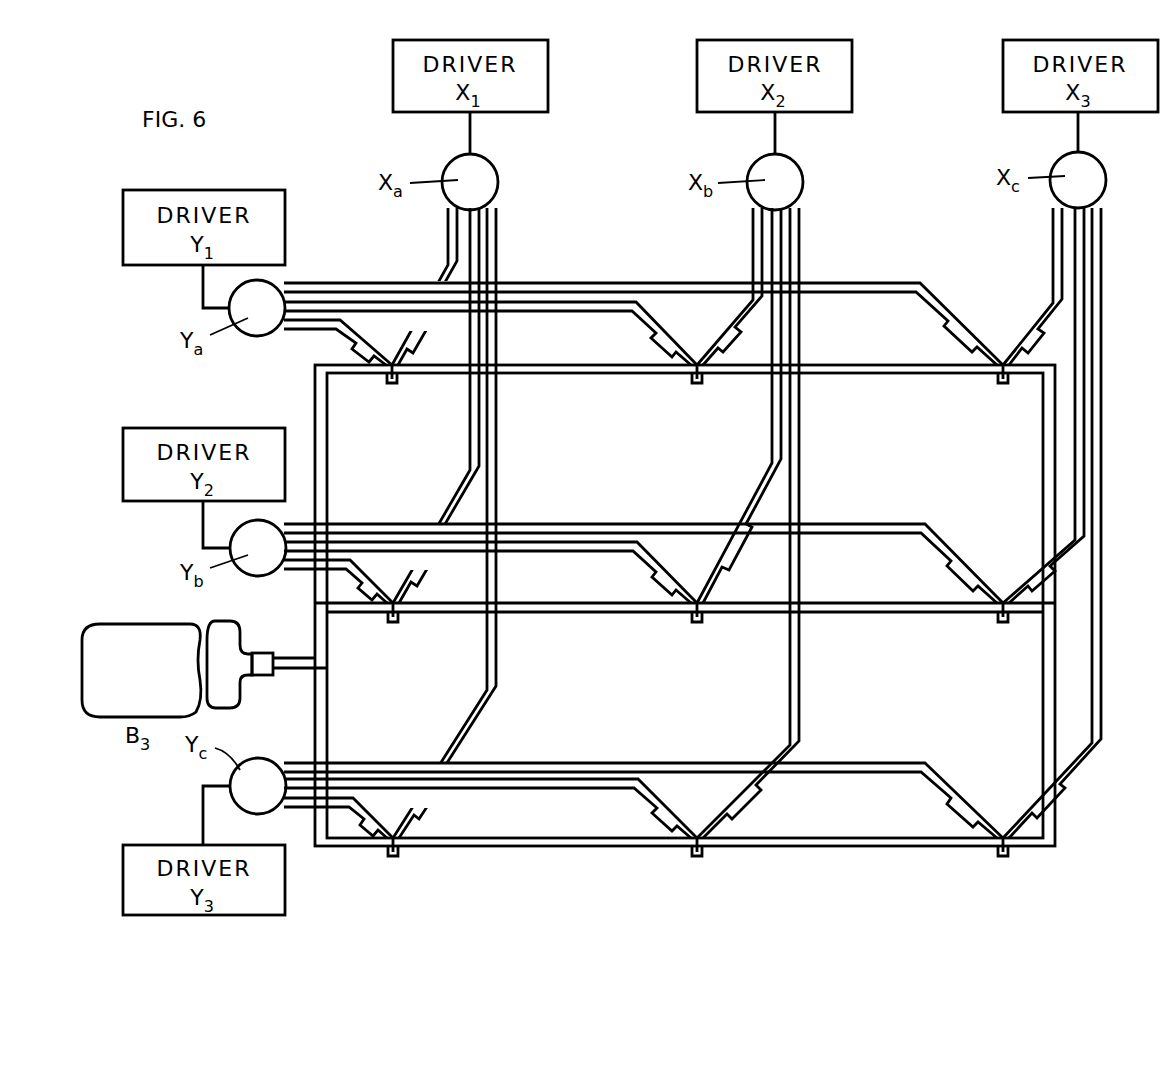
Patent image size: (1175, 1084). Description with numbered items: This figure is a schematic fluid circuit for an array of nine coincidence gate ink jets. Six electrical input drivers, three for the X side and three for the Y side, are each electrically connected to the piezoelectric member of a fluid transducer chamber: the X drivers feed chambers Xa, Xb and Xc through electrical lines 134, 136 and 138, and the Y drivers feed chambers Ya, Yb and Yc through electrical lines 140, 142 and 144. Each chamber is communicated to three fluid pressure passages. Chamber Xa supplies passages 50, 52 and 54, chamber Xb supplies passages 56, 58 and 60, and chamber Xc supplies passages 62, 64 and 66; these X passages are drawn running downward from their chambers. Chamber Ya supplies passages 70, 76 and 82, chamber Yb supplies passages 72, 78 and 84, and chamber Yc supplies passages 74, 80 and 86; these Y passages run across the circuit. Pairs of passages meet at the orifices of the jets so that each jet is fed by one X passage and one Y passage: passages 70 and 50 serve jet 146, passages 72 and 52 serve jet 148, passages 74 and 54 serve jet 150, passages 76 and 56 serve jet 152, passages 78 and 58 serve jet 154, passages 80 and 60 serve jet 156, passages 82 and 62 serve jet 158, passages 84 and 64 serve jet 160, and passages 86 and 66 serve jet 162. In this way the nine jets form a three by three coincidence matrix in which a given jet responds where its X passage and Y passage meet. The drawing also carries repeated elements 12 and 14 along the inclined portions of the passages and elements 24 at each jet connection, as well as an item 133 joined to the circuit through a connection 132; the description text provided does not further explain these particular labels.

The Y-line switching element 12 is at (357, 340).
The X-line switching element 14 is at (420, 322).
The cell connection stub 24 is at (396, 385).
The fluid pressure passage 50 is at (449, 229).
The fluid pressure passage 52 is at (468, 430).
The fluid pressure passage 54 is at (497, 665).
The fluid pressure passage 56 is at (753, 228).
The fluid pressure passage 58 is at (772, 430).
The fluid pressure passage 60 is at (800, 665).
The fluid pressure passage 62 is at (1053, 225).
The fluid pressure passage 64 is at (1078, 428).
The fluid pressure passage 66 is at (1098, 630).
The fluid pressure passage 70 is at (296, 330).
The fluid pressure passage 72 is at (300, 572).
The fluid pressure passage 74 is at (300, 808).
The fluid pressure passage 76 is at (566, 312).
The fluid pressure passage 78 is at (565, 552).
The fluid pressure passage 80 is at (565, 790).
The fluid pressure passage 82 is at (898, 283).
The fluid pressure passage 84 is at (903, 524).
The fluid pressure passage 86 is at (904, 763).
The connection to bias source 132 is at (290, 670).
The bias source B3 133 is at (167, 669).
The electrical line 134 is at (478, 133).
The electrical line 136 is at (782, 133).
The electrical line 138 is at (1083, 128).
The electrical line 140 is at (203, 291).
The electrical line 142 is at (203, 529).
The electrical line 144 is at (205, 800).
The jet 146 is at (384, 395).
The jet 148 is at (390, 632).
The jet 150 is at (385, 865).
The jet 152 is at (688, 390).
The jet 154 is at (697, 628).
The jet 156 is at (702, 865).
The jet 158 is at (998, 393).
The jet 160 is at (998, 630).
The jet 162 is at (1005, 865).